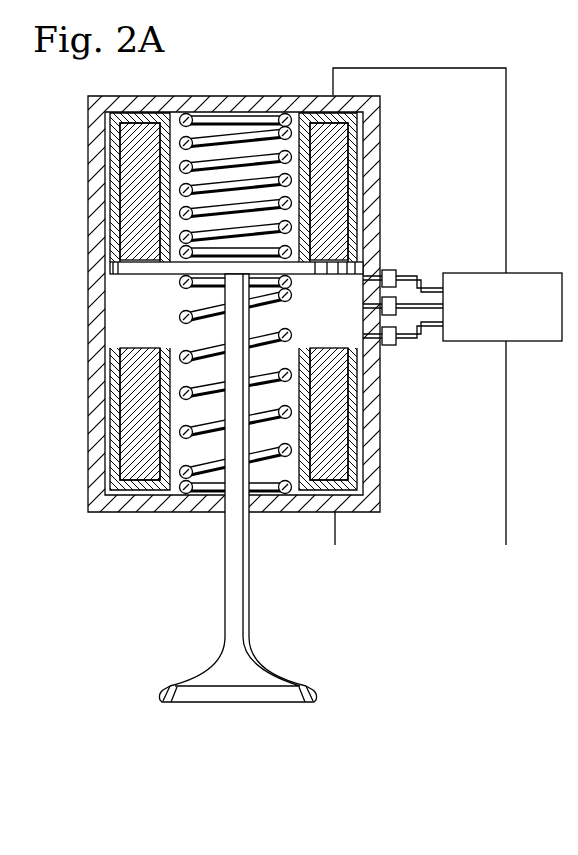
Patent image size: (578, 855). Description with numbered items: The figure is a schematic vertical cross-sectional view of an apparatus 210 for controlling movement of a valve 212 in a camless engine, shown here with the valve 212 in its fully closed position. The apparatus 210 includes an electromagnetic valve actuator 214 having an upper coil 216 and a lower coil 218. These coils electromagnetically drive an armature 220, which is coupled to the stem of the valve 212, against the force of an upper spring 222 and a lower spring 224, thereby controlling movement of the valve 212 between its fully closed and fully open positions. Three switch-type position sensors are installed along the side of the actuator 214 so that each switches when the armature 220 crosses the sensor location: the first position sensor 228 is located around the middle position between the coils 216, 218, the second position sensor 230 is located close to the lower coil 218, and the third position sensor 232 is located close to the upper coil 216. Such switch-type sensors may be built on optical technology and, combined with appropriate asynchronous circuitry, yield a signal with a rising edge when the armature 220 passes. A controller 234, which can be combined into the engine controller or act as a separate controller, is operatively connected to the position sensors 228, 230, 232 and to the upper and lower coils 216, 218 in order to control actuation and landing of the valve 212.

The apparatus 210 is at (371, 58).
The valve 212 is at (280, 672).
The electromagnetic valve actuator 214 is at (89, 317).
The upper coil 216 is at (131, 192).
The lower coil 218 is at (131, 420).
The armature 220 is at (135, 268).
The upper spring 222 is at (236, 118).
The lower spring 224 is at (265, 455).
The first position sensor 228 is at (396, 304).
The second position sensor 230 is at (390, 346).
The third position sensor 232 is at (388, 270).
The controller 234 is at (538, 342).